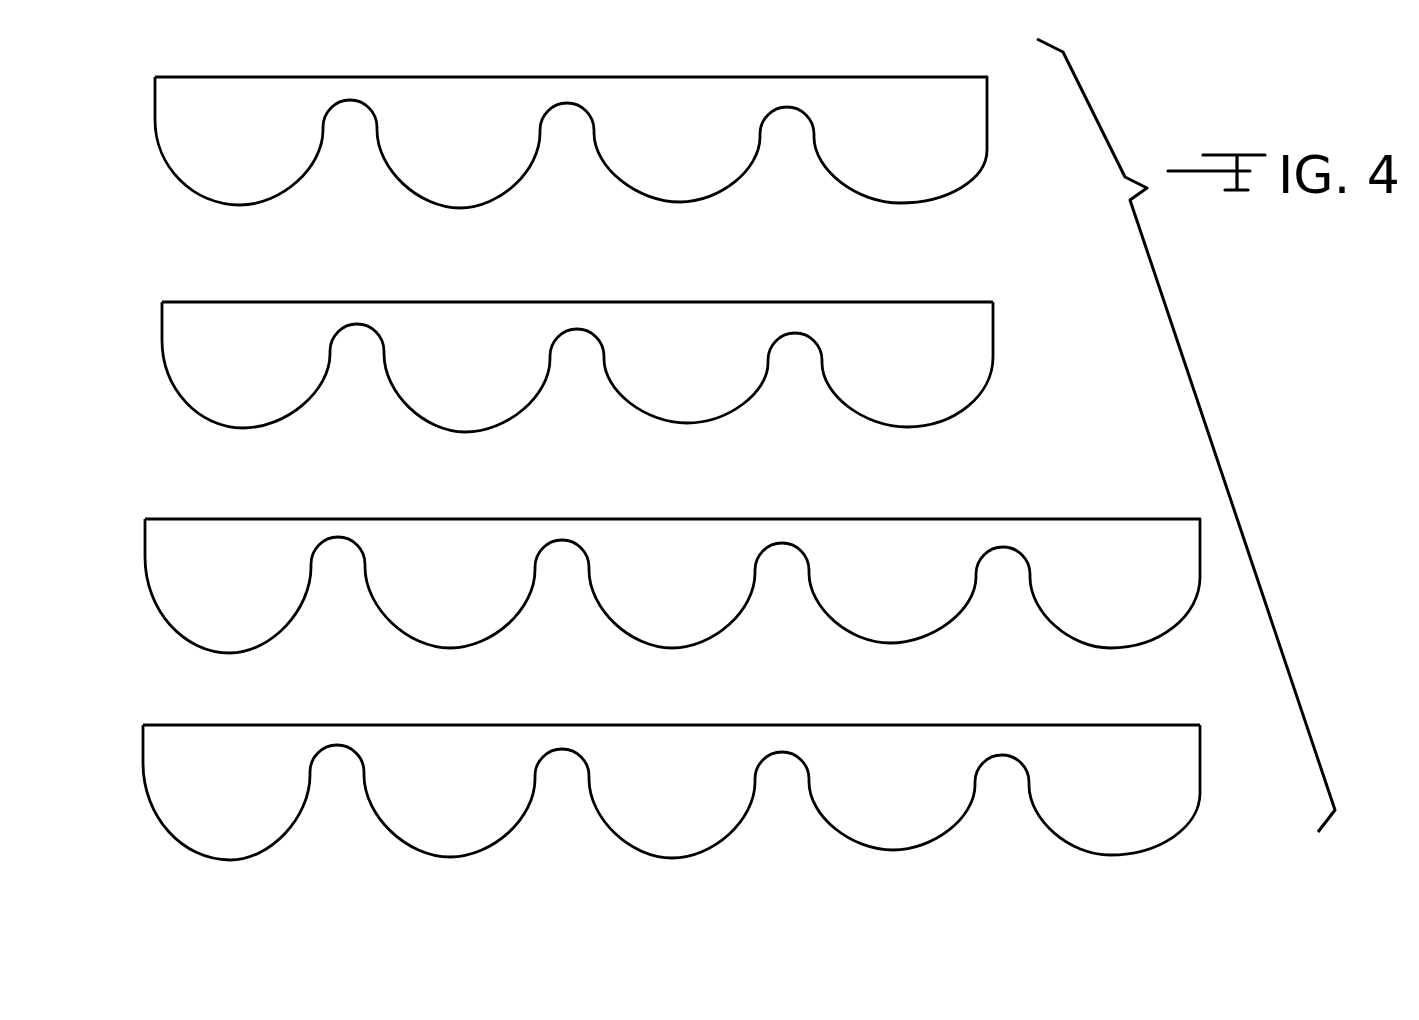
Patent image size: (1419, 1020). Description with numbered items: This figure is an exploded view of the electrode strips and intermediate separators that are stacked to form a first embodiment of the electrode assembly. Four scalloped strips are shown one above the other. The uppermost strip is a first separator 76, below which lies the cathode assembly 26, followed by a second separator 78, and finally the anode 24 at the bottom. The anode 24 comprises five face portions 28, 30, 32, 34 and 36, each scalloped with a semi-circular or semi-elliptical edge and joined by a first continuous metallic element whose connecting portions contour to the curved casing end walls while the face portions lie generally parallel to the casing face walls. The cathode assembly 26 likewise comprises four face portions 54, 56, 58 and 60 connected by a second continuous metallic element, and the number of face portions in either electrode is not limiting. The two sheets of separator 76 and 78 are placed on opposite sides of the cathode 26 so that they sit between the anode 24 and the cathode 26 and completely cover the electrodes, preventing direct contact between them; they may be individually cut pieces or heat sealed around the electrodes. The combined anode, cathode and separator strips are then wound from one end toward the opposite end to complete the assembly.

The anode 24 is at (717, 806).
The cathode assembly 26 is at (629, 367).
The anode face portion 28 is at (248, 792).
The anode face portion 30 is at (464, 798).
The anode face portion 32 is at (686, 799).
The anode face portion 34 is at (914, 804).
The anode face portion 36 is at (1131, 807).
The cathode face portion 54 is at (251, 354).
The cathode face portion 56 is at (483, 357).
The cathode face portion 58 is at (704, 364).
The cathode face portion 60 is at (926, 364).
The separator 76 is at (883, 77).
The separator 78 is at (1057, 519).